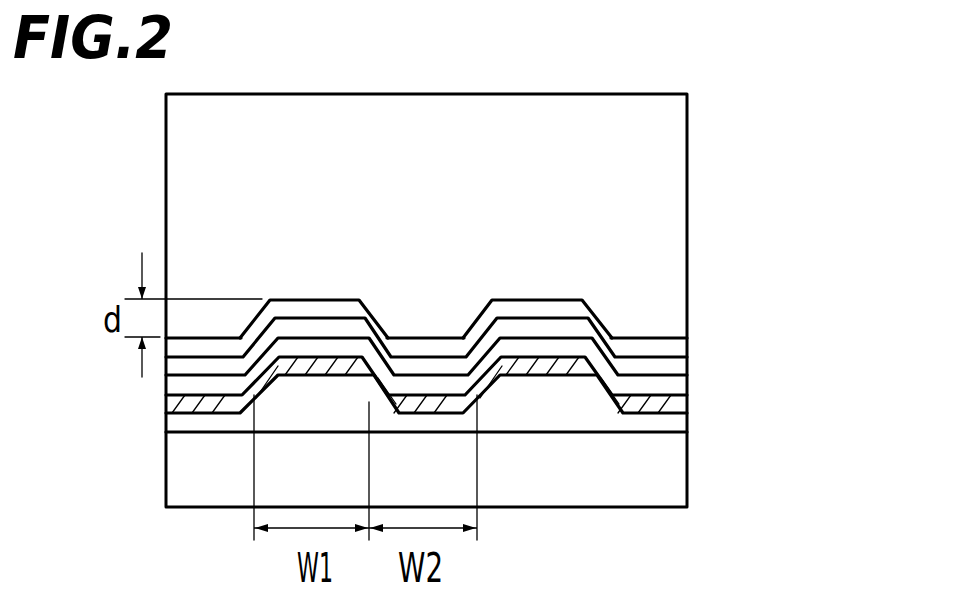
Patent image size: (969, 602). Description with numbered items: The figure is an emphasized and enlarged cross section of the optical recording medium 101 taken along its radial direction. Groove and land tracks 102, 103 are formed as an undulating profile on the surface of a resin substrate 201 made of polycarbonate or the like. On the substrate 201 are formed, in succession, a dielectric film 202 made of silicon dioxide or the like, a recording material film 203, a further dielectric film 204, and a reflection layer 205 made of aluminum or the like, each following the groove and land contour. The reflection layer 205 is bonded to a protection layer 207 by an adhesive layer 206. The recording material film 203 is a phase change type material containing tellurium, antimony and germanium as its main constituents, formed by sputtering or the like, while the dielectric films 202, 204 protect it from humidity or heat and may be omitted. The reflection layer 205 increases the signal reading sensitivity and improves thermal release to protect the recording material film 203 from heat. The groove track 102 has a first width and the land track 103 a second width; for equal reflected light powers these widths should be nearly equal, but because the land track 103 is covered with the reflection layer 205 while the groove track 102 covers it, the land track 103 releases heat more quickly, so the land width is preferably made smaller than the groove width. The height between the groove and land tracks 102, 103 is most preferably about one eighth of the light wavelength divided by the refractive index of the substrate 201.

The optical recording medium 101 is at (687, 127).
The resin substrate 201 is at (662, 185).
The groove track 102 is at (523, 300).
The land track 103 is at (208, 336).
The dielectric film 202 is at (677, 348).
The recording material film 203 is at (677, 367).
The dielectric film 204 is at (677, 385).
The reflection layer 205 is at (677, 403).
The adhesive layer 206 is at (677, 423).
The protection layer 207 is at (667, 478).